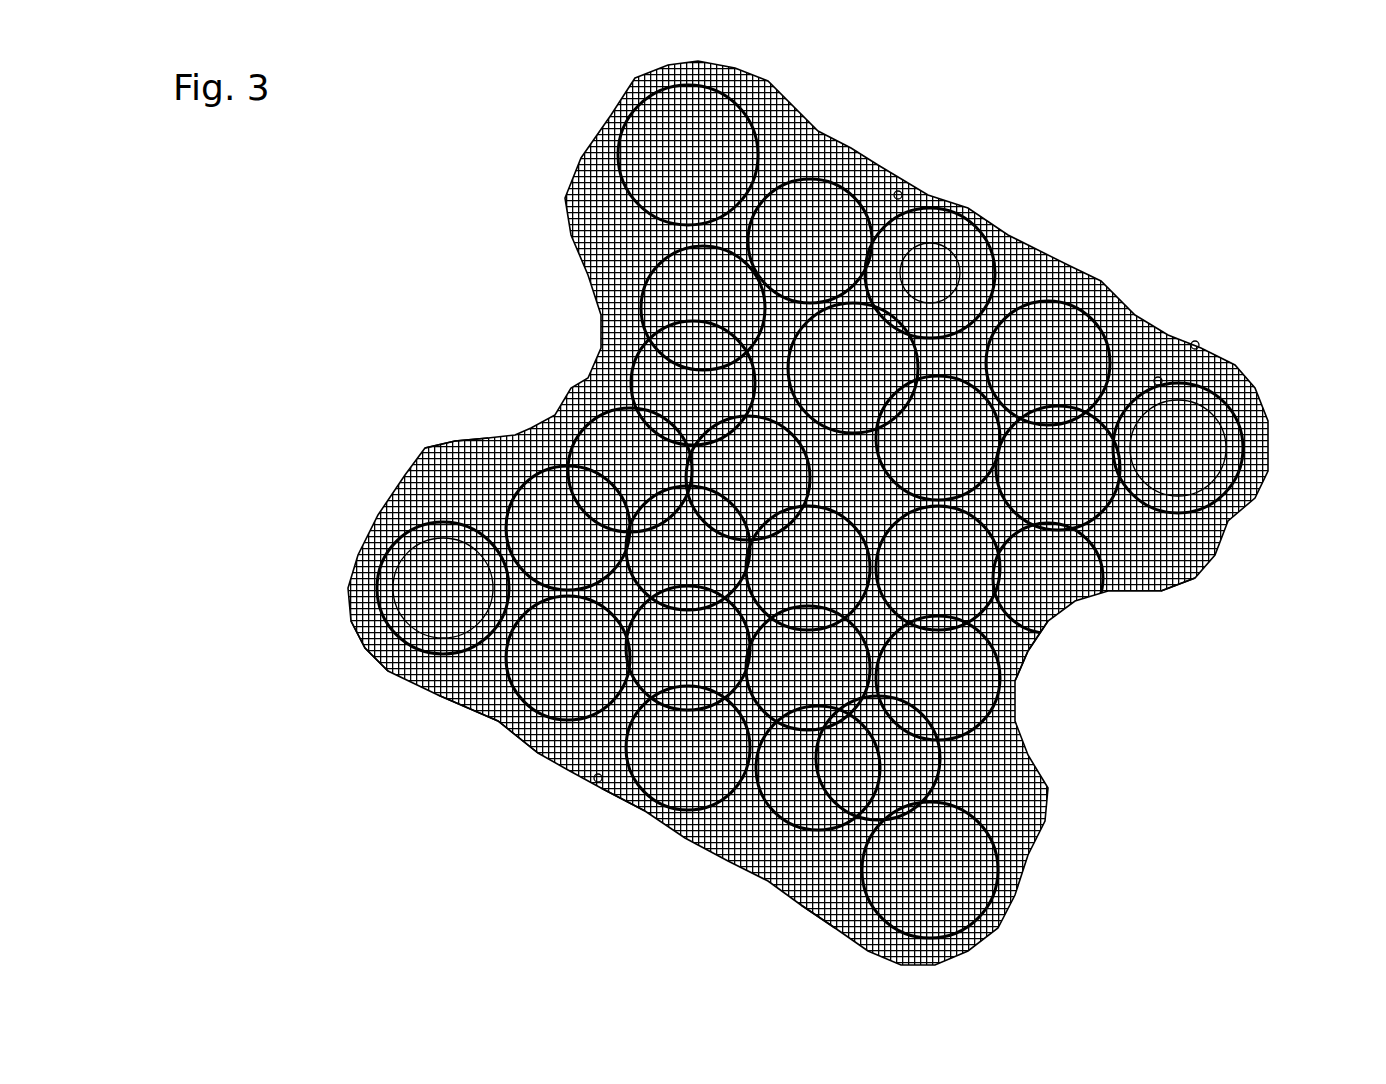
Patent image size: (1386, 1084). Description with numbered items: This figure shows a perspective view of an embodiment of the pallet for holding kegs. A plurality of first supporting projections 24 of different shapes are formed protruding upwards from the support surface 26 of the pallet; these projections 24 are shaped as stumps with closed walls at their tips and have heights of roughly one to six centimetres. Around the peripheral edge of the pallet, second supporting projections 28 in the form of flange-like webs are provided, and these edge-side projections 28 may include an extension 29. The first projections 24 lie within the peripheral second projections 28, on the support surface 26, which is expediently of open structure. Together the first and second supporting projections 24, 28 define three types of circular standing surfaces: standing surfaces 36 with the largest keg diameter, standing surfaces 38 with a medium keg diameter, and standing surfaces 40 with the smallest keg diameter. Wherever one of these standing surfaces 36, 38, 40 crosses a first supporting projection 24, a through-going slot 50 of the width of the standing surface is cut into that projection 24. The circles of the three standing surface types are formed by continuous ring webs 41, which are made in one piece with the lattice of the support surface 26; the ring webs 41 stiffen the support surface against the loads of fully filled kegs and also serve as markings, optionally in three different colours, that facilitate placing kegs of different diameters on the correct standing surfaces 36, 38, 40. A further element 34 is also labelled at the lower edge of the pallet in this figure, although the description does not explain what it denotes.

The first supporting projections 24 is at (923, 360).
The support surface 26 is at (493, 733).
The second supporting projections 28 is at (477, 427).
The extension 29 is at (1240, 400).
The first layer 34 is at (813, 887).
The standing surfaces with a larger diameter 36 is at (1074, 677).
The standing surfaces with a medium keg diameter size 38 is at (627, 858).
The standing surfaces with the smallest keg diameter size 40 is at (1187, 337).
The ring webs 41 is at (890, 187).
The through-going slots 50 is at (630, 243).